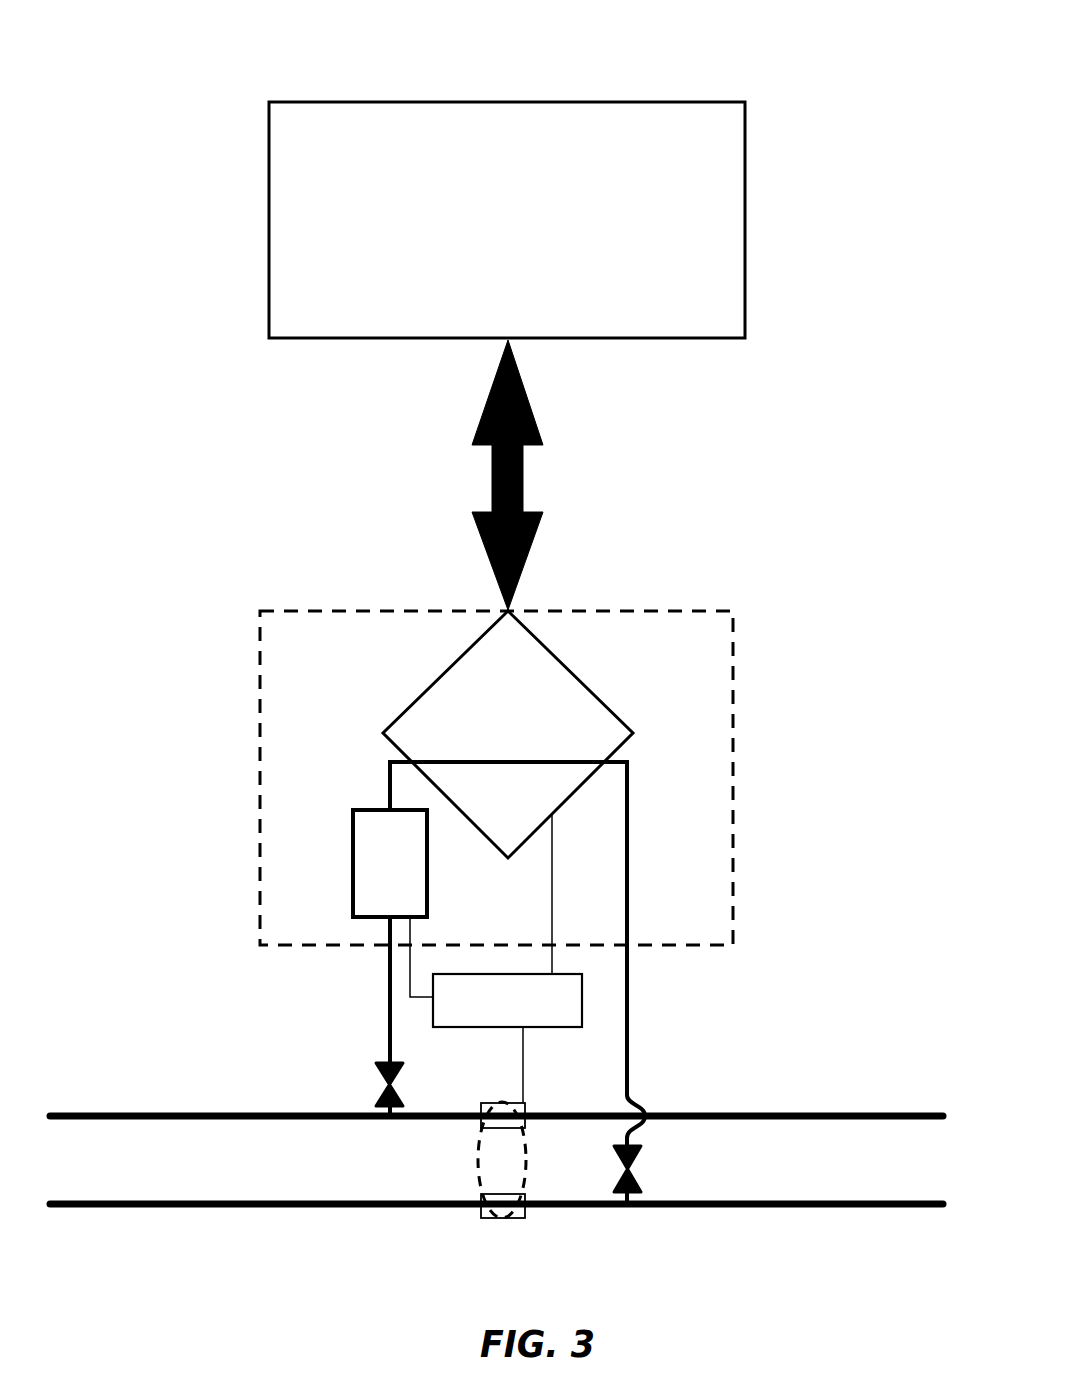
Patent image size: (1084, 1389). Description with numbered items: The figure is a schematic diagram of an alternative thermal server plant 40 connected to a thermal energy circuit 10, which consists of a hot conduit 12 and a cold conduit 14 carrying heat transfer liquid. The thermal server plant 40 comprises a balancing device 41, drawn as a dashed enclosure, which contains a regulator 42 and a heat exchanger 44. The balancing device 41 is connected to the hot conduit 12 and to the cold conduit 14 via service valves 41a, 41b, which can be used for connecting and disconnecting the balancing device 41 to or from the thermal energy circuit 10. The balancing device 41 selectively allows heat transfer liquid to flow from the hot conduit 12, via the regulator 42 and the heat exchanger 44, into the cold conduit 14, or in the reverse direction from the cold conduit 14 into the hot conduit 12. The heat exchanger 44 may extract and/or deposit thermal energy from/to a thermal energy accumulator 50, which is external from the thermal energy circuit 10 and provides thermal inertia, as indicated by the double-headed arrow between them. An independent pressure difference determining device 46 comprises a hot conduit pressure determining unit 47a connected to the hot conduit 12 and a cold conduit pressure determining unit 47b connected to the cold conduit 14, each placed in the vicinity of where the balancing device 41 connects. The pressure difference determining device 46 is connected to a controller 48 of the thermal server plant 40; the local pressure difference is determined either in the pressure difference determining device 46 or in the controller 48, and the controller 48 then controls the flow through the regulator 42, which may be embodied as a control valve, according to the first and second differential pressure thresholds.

The thermal energy circuit 10 is at (852, 1087).
The hot conduit 12 is at (785, 1113).
The cold conduit 14 is at (782, 1208).
The thermal server plant 40 is at (258, 72).
The balancing device 41 is at (280, 917).
The service valve 41a is at (377, 1100).
The service valve 41b is at (635, 1148).
The regulator 42 is at (363, 869).
The heat exchanger 44 is at (483, 662).
The pressure difference determining device 46 is at (492, 1145).
The hot conduit pressure determining unit 47a is at (483, 1105).
The cold conduit pressure determining unit 47b is at (483, 1213).
The controller 48 is at (538, 1017).
The thermal energy accumulator 50 is at (688, 116).